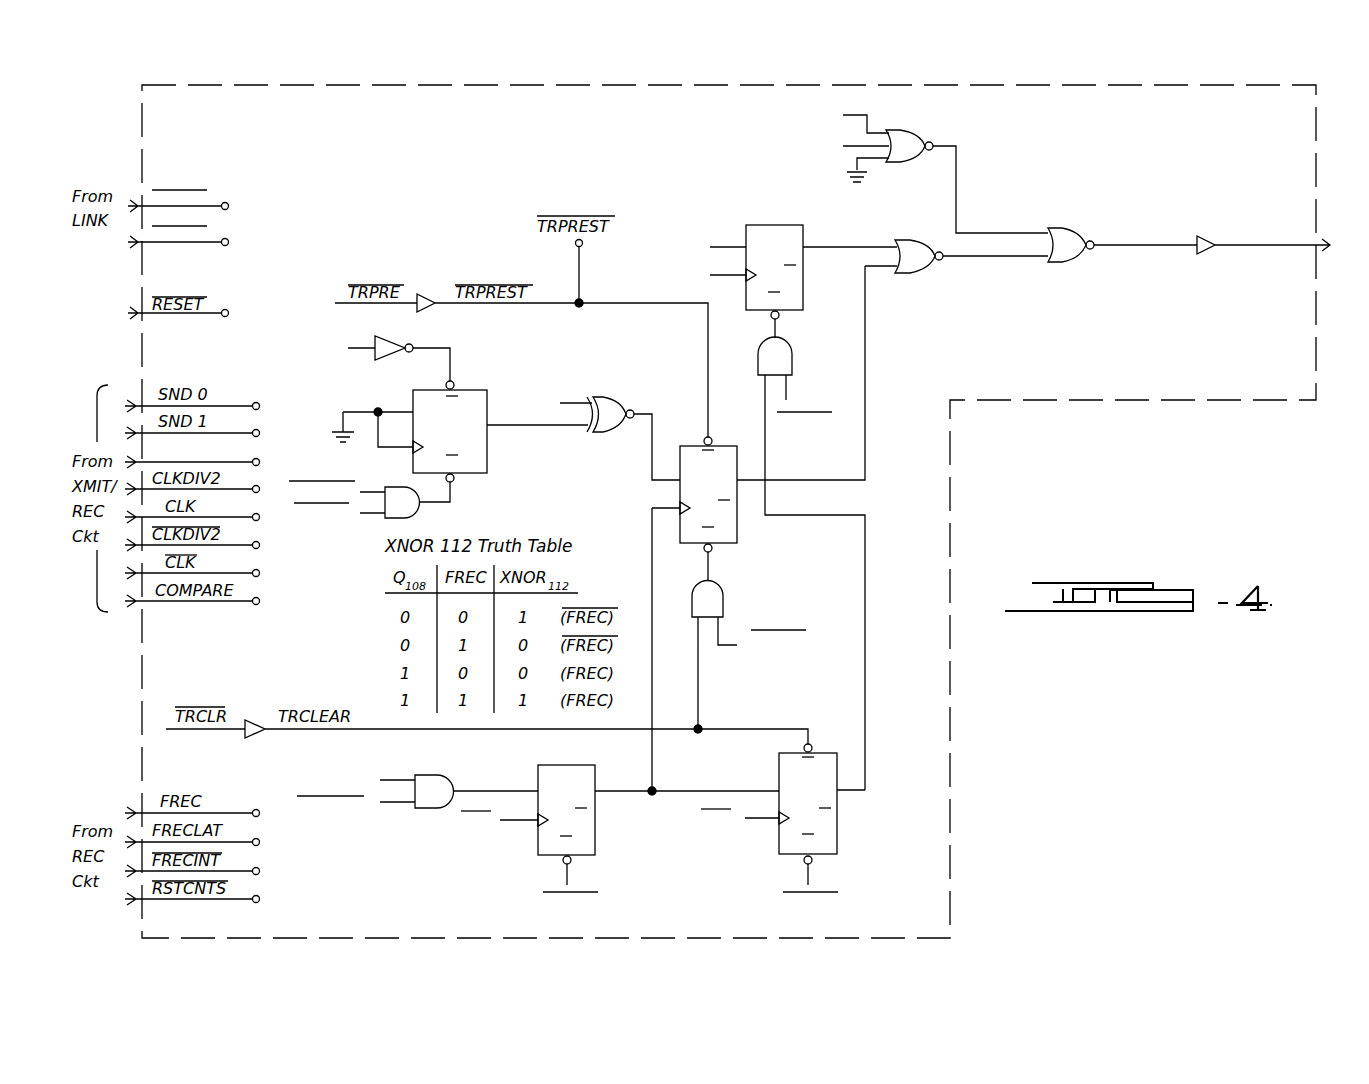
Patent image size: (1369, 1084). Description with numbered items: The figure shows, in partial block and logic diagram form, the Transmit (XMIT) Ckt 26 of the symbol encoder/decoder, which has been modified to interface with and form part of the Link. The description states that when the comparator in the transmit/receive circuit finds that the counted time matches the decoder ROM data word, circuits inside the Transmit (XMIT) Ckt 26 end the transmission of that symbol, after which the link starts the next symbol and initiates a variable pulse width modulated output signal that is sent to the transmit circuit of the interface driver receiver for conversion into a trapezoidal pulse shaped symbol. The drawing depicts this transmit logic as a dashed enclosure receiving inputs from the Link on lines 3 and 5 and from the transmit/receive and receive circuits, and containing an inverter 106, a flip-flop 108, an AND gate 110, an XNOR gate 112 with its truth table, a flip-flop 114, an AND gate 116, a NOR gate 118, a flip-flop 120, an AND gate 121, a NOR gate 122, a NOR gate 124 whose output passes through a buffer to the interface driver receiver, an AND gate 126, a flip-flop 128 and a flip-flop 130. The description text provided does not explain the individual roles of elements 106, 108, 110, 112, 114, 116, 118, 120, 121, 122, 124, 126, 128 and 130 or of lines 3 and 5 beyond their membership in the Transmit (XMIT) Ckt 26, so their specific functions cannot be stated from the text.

The Transmit (XMIT) Ckt 26 is at (729, 511).
The TRPRE input line from LINK 3 is at (178, 198).
The TRCLR input line from LINK 5 is at (178, 234).
The inverter 106 is at (372, 360).
The flip-flop 108 is at (483, 395).
The AND gate 110 is at (410, 512).
The XNOR gate 112 is at (608, 403).
The flip-flop 114 is at (735, 536).
The AND gate 116 is at (720, 598).
The NOR gate 118 is at (916, 268).
The flip-flop 120 is at (765, 220).
The AND gate 121 is at (786, 362).
The NOR gate 122 is at (902, 141).
The NOR gate 124 is at (1065, 232).
The AND gate 126 is at (423, 803).
The flip-flop 128 is at (595, 846).
The flip-flop 130 is at (835, 844).